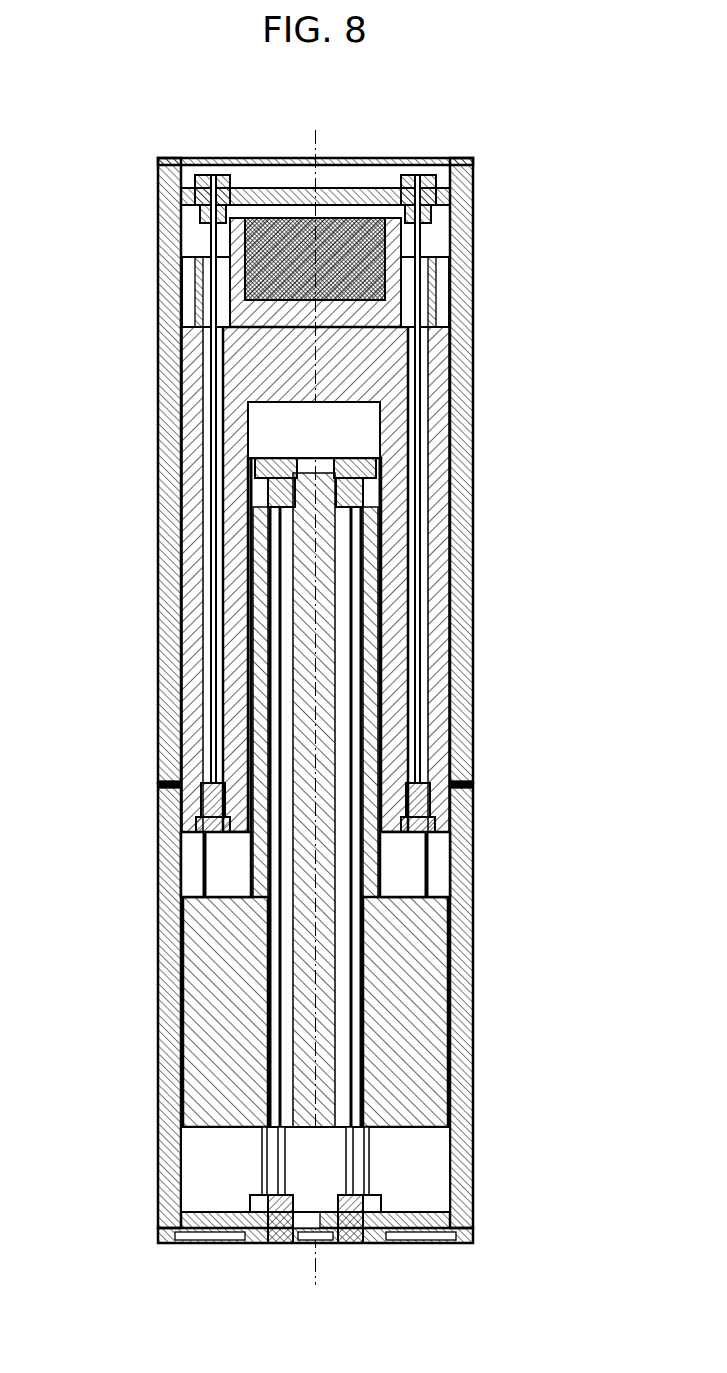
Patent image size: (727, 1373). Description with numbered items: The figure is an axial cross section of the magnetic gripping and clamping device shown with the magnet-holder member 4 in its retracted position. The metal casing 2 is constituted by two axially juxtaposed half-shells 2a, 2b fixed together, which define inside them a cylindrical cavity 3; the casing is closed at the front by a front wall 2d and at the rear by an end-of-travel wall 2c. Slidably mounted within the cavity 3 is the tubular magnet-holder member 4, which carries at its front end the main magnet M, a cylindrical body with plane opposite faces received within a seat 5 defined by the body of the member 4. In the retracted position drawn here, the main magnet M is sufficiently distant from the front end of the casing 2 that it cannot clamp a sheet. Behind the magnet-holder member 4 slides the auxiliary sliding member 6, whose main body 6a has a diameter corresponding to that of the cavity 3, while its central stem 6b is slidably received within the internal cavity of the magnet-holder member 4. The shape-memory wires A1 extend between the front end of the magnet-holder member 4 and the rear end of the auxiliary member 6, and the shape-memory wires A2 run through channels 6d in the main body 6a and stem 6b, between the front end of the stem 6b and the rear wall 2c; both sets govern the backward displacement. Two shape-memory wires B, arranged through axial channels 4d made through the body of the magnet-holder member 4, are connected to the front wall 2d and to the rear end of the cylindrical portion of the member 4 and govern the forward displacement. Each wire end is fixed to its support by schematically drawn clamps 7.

The casing 2 is at (315, 669).
The half-shell 2a is at (168, 528).
The half-shell 2b is at (165, 958).
The end-of-travel wall 2c is at (418, 1197).
The front wall 2d is at (437, 187).
The cylindrical cavity 3 is at (195, 1185).
The magnet-holder member 4 is at (250, 366).
The axial channels 4d is at (206, 432).
The seat 5 is at (315, 200).
The auxiliary sliding member 6 is at (298, 792).
The main body 6a is at (222, 1018).
The central stem 6b is at (260, 610).
The channels 6d is at (273, 698).
The clamps 7 is at (207, 174).
The shape-memory wires A1 is at (205, 850).
The shape-memory wires A2 is at (270, 1145).
The shape-memory wires B is at (213, 288).
The main magnet M is at (347, 220).